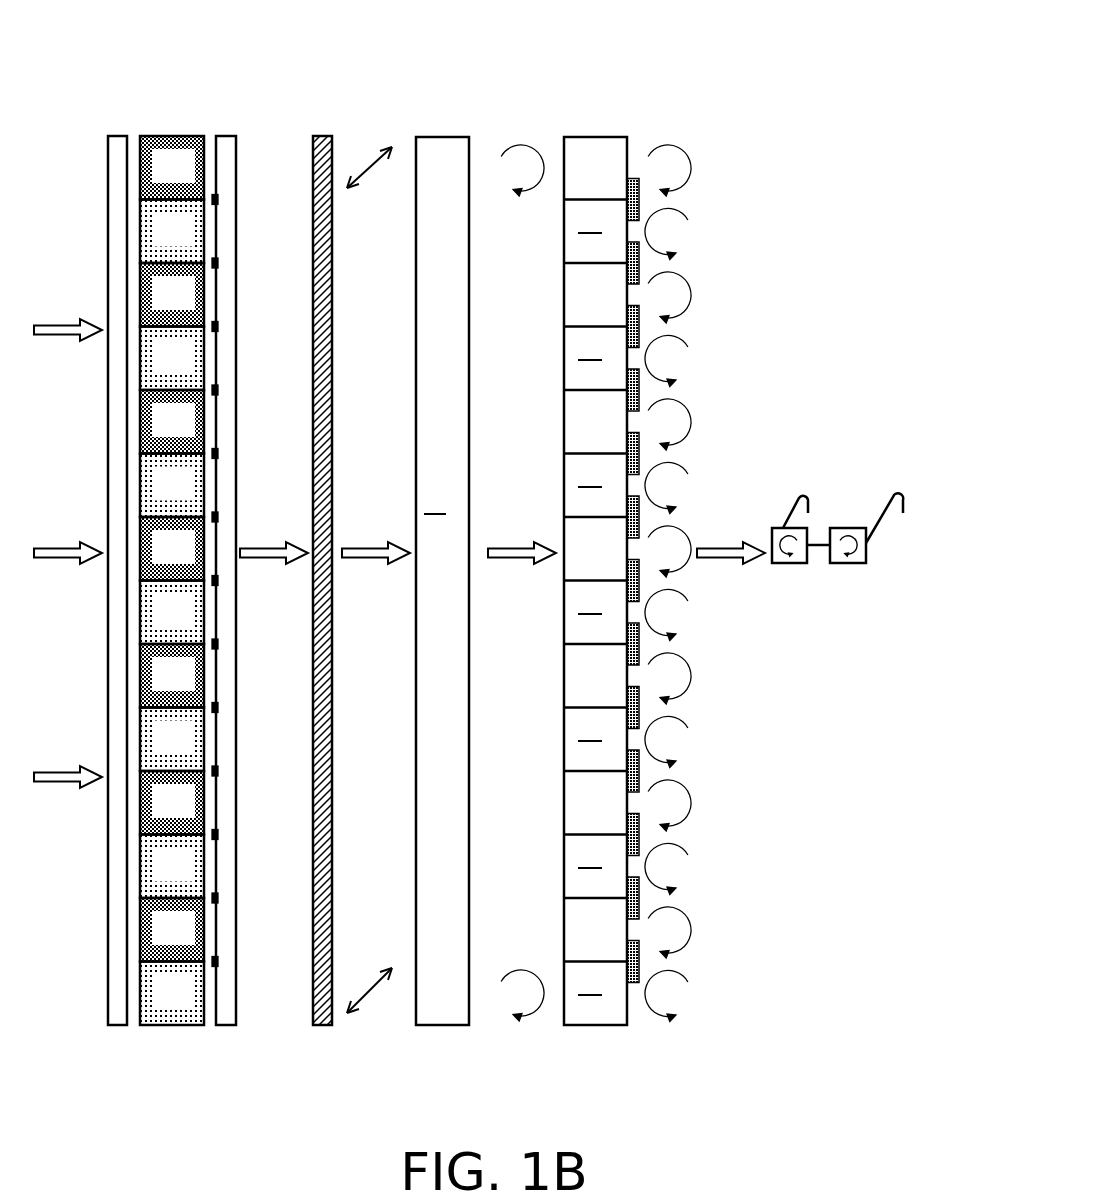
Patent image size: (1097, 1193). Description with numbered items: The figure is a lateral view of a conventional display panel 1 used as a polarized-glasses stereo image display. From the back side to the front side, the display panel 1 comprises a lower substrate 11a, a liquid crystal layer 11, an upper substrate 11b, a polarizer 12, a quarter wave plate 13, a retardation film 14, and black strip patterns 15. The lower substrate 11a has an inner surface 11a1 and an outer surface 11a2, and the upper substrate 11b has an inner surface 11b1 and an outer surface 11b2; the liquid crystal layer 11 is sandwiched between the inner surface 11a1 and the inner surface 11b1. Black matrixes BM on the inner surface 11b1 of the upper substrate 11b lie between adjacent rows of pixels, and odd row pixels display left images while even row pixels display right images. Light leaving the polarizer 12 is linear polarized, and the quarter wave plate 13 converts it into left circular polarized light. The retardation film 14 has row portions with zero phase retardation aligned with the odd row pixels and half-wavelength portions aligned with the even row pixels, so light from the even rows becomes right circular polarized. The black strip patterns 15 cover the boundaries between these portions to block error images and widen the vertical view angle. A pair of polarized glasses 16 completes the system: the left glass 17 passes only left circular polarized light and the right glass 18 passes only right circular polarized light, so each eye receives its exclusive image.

The display panel 1 is at (781, 37).
The liquid crystal layer 11 is at (173, 136).
The lower substrate 11a is at (115, 136).
The inner surface 11a1 is at (127, 153).
The outer surface 11a2 is at (108, 177).
The upper substrate 11b is at (227, 136).
The inner surface 11b1 is at (216, 153).
The outer surface 11b2 is at (236, 177).
The black matrixes BM is at (219, 263).
The polarizer 12 is at (322, 136).
The quarter wave plate 13 is at (442, 137).
The retardation film 14 is at (597, 137).
The black strip patterns 15 is at (632, 178).
The polarized glasses 16 is at (837, 530).
The left glass 17 is at (845, 563).
The right glass 18 is at (790, 563).